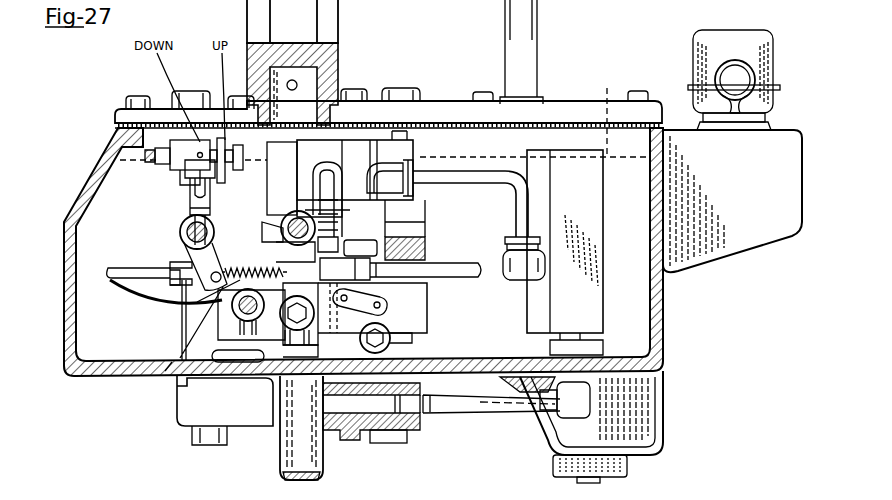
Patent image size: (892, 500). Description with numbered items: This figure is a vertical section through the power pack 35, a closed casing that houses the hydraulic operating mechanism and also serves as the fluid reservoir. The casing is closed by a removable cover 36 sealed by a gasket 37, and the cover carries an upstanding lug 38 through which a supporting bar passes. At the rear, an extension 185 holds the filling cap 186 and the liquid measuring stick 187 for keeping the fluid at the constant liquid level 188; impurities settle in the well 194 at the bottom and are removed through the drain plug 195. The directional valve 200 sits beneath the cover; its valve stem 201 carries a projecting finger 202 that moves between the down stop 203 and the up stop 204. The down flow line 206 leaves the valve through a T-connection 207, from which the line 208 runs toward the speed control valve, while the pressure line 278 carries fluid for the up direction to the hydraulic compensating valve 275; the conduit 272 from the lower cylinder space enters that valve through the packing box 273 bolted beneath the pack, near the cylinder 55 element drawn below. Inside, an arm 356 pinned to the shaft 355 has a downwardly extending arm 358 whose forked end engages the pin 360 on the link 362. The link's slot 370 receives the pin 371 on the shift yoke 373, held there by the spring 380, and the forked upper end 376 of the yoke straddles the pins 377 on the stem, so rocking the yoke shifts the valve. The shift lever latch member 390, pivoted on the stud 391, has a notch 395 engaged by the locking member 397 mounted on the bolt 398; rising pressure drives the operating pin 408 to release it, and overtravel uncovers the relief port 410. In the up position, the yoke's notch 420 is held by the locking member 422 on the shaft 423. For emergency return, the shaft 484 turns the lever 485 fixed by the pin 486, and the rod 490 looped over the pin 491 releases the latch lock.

The power pack 35 is at (681, 312).
The removable cover 36 is at (442, 104).
The gasket 37 is at (562, 127).
The upstanding lug 38 is at (333, 32).
The cylinder 55 is at (313, 472).
The extension 185 is at (760, 236).
The filling cap 186 is at (713, 45).
The liquid measuring stick 187 is at (718, 72).
The liquid level 188 is at (535, 112).
The well 194 is at (647, 432).
The drain plug 195 is at (600, 482).
The directional valve 200 is at (413, 151).
The valve stem 201 is at (253, 168).
The projecting finger 202 is at (220, 137).
The stop 203 is at (203, 147).
The stop 204 is at (240, 145).
The flow line 206 is at (374, 197).
The T-connection 207 is at (404, 243).
The line 208 is at (510, 278).
The conduit 272 is at (465, 414).
The packing box 273 is at (238, 430).
The hydraulic compensating valve 275 is at (597, 206).
The pressure line 278 is at (500, 170).
The shaft 355 is at (295, 218).
The arm 356 is at (288, 238).
The downwardly extending arm 358 is at (292, 268).
The pin 360 is at (316, 268).
The link 362 is at (300, 242).
The slot 370 is at (150, 292).
The pin 371 is at (178, 305).
The shift yoke 373 is at (190, 203).
The forked upper end 376 is at (190, 193).
The pins 377 is at (187, 178).
The spring 380 is at (203, 310).
The shift lever latch member 390 is at (288, 354).
The stud 391 is at (281, 323).
The notch 395 is at (293, 381).
The locking member 397 is at (328, 348).
The bolt 398 is at (412, 341).
The operating pin 408 is at (362, 442).
The relief port 410 is at (392, 320).
The notch 420 is at (238, 356).
The locking member 422 is at (165, 372).
The shaft 423 is at (238, 312).
The shaft 484 is at (181, 232).
The lever 485 is at (180, 262).
The pin 486 is at (177, 277).
The rod 490 is at (371, 297).
The pin 491 is at (400, 280).